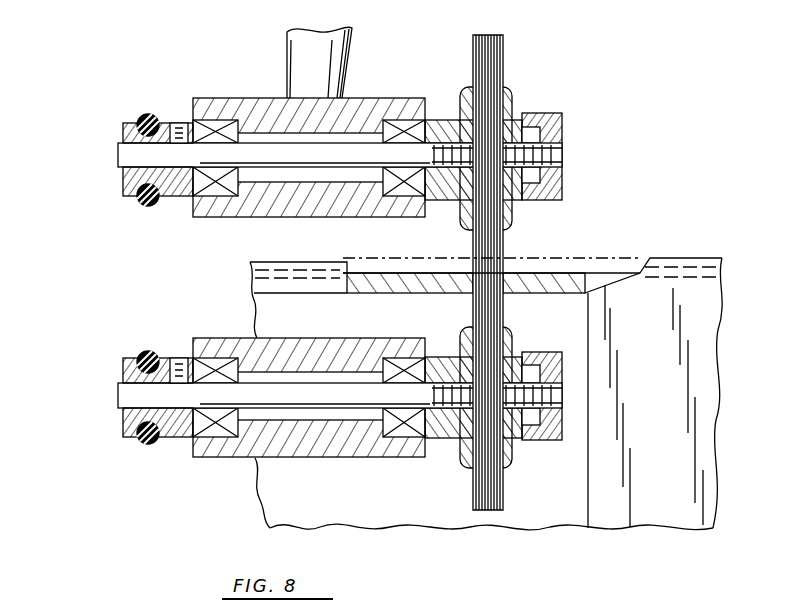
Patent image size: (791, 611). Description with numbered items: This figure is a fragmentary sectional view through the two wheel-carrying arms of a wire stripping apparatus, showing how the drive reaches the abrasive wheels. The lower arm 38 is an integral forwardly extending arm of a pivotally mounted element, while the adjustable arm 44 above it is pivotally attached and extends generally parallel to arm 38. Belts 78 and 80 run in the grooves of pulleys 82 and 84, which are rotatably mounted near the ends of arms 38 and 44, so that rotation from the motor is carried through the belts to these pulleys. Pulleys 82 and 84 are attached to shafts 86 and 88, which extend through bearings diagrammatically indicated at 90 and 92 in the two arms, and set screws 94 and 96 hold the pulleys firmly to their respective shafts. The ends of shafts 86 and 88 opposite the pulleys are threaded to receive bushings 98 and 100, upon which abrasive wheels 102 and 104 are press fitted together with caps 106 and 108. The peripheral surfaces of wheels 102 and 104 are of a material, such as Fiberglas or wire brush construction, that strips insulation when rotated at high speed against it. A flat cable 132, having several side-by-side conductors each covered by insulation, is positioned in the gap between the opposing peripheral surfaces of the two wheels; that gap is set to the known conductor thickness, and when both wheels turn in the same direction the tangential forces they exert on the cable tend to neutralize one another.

The arm 38 is at (255, 458).
The adjustable arm 44 is at (250, 214).
The belt 78 is at (146, 355).
The belt 80 is at (148, 113).
The pulley 82 is at (128, 420).
The pulley 84 is at (128, 183).
The shaft 86 is at (130, 398).
The shaft 88 is at (130, 158).
The bearing 90 is at (215, 438).
The bearing 92 is at (215, 122).
The set screw 94 is at (178, 358).
The set screw 96 is at (176, 122).
The bushing 98 is at (452, 425).
The bushing 100 is at (442, 120).
The abrasive wheel 102 is at (497, 500).
The abrasive wheel 104 is at (497, 52).
The cap 106 is at (556, 368).
The cap 108 is at (563, 130).
The flat cable 132 is at (588, 272).